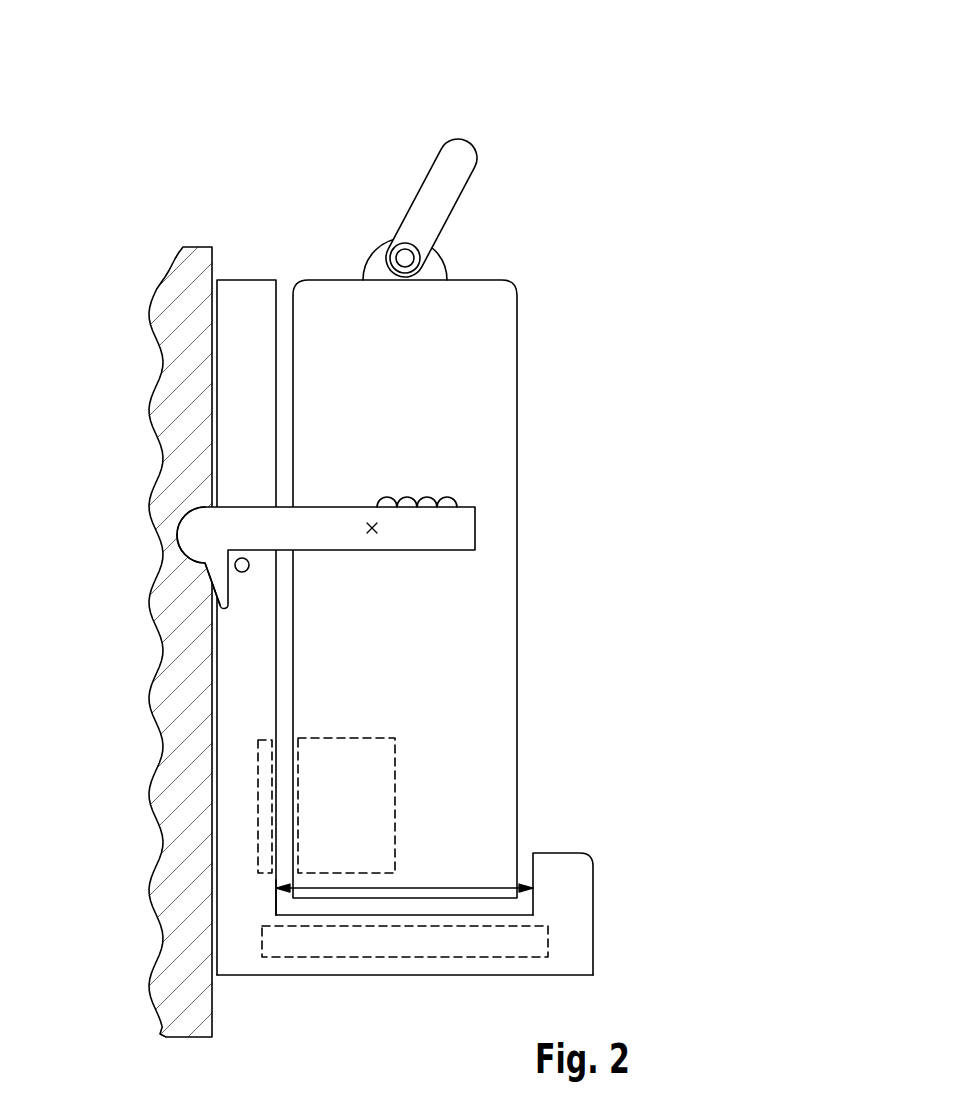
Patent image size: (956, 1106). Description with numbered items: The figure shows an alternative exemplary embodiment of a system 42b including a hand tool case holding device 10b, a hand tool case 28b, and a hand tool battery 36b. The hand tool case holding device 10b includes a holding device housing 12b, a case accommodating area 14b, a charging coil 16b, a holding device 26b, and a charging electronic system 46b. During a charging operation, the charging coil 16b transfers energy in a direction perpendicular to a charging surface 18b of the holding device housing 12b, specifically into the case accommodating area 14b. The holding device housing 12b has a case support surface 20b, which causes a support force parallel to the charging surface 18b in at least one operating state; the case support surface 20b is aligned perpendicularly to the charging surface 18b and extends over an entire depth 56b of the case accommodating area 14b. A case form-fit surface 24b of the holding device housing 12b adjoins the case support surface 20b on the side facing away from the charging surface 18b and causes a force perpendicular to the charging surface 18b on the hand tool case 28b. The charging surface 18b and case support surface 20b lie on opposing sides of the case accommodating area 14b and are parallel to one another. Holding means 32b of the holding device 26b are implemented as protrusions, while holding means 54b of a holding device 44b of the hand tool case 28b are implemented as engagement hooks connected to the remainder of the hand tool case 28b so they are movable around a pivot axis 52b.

The hand tool case holding device 10b is at (245, 256).
The holding device housing 12b is at (237, 335).
The case accommodating area 14b is at (407, 162).
The charging coil 16b is at (263, 813).
The charging surface 18b is at (288, 821).
The case support surface 20b is at (468, 904).
The case form-fit surface 24b is at (524, 867).
The holding device 26b is at (496, 533).
The hand tool case 28b is at (497, 304).
The holding means 32b is at (235, 565).
The hand tool battery 36b is at (372, 768).
The system 42b is at (541, 114).
The holding device 44b is at (326, 558).
The charging electronic system 46b is at (345, 941).
The pivot axis 52b is at (372, 527).
The holding means 54b is at (205, 533).
The depth 56b is at (431, 887).